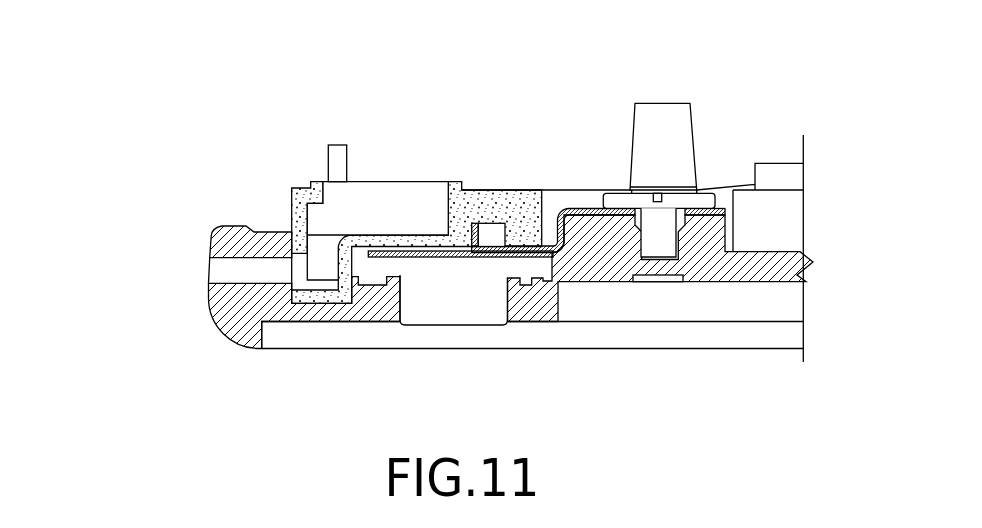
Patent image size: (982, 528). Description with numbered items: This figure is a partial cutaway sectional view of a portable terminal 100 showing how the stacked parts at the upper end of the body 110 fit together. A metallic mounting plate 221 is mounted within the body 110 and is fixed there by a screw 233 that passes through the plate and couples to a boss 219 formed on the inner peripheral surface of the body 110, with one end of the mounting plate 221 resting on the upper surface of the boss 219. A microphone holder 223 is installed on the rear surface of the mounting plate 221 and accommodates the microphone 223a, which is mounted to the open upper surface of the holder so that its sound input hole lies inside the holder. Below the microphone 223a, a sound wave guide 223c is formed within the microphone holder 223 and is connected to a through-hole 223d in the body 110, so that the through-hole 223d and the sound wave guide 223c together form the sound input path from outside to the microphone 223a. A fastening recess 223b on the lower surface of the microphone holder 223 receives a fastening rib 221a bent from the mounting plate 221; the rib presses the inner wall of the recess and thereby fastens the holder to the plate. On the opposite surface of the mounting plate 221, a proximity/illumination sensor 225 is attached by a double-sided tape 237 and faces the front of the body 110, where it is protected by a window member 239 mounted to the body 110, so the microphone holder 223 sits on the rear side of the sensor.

The portable terminal 100 is at (203, 158).
The body 110 is at (230, 330).
The boss 219 is at (707, 237).
The mounting plate 221 is at (576, 205).
The fastening rib 221a is at (474, 222).
The microphone holder 223 is at (300, 188).
The microphone 223a is at (385, 193).
The fastening recess 223b is at (495, 230).
The sound wave guide 223c is at (322, 273).
The through-hole 223d is at (218, 272).
The proximity/illumination sensor 225 is at (473, 305).
The screw 233 is at (671, 202).
The double-sided tape 237 is at (430, 260).
The window member 239 is at (605, 337).